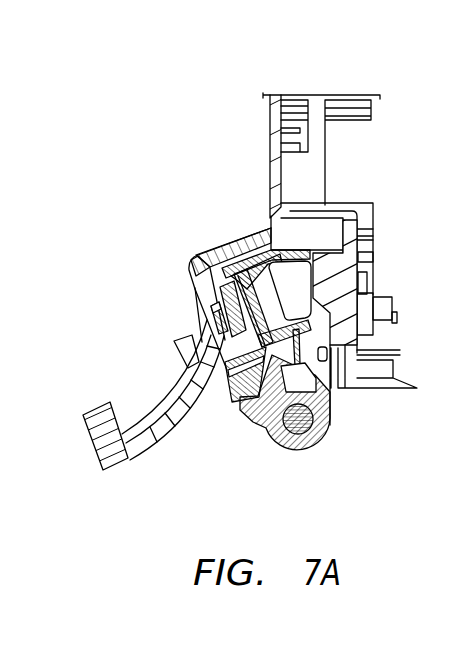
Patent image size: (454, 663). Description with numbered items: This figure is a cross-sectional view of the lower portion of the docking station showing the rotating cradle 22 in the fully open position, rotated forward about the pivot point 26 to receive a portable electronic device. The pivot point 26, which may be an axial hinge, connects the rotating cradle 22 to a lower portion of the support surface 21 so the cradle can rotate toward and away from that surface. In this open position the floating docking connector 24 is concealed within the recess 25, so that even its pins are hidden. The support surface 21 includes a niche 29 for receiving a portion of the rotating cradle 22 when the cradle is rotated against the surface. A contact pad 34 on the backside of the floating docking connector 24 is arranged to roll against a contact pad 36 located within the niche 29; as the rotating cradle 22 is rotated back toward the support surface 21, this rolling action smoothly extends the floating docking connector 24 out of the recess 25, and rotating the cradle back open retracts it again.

The support surface 21 is at (264, 136).
The rotating cradle 22 is at (116, 474).
The floating docking connector 24 is at (221, 291).
The recess 25 is at (189, 300).
The pivot point 26 is at (317, 434).
The niche 29 is at (310, 231).
The contact pad 34 is at (267, 281).
The contact pad 36 is at (346, 264).